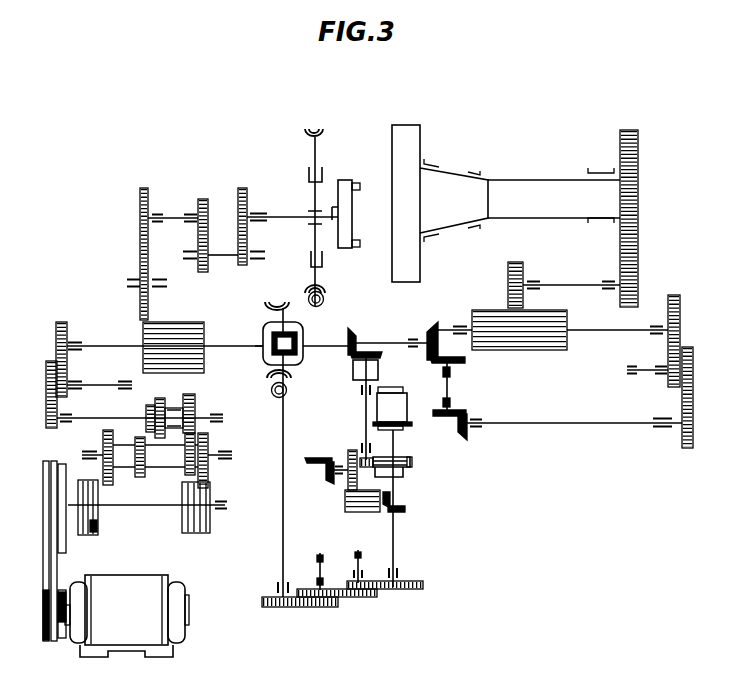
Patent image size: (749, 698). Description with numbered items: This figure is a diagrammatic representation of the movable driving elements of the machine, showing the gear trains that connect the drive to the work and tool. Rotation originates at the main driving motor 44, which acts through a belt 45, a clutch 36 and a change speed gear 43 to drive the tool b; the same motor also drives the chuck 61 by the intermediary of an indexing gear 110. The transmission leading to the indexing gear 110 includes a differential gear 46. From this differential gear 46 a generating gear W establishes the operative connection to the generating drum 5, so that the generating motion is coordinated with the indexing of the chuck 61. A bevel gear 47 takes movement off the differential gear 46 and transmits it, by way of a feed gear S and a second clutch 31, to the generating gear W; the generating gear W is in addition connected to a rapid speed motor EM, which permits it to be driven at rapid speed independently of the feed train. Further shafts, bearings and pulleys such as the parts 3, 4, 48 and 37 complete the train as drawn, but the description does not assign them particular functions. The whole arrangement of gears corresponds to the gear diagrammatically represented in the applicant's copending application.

The shaft 3 is at (270, 217).
The bracket 4 is at (320, 173).
The generating drum 5 is at (317, 150).
The tool b is at (347, 183).
The chuck 61 is at (408, 142).
The differential gear 46 is at (263, 330).
The bevel gear 47 is at (356, 333).
The gear box 48 is at (378, 372).
The feed gear S is at (365, 413).
The rapid speed motor EM is at (407, 408).
The clutch 31 is at (412, 472).
The change speed gear 43 is at (195, 403).
The indexing gear 110 is at (677, 390).
The pulley 37 is at (100, 522).
The clutch 36 is at (210, 523).
The belt 45 is at (62, 568).
The main driving motor 44 is at (133, 587).
The generating gear W is at (342, 605).